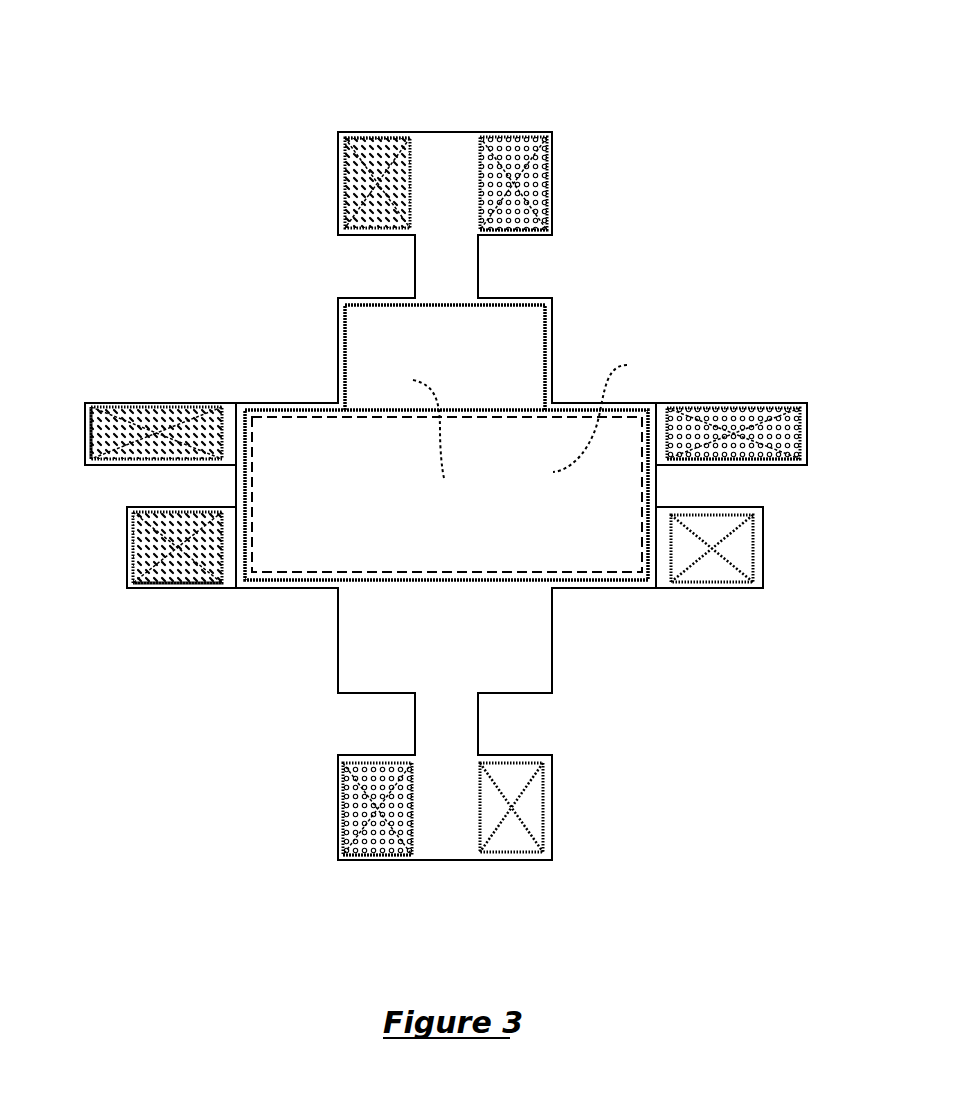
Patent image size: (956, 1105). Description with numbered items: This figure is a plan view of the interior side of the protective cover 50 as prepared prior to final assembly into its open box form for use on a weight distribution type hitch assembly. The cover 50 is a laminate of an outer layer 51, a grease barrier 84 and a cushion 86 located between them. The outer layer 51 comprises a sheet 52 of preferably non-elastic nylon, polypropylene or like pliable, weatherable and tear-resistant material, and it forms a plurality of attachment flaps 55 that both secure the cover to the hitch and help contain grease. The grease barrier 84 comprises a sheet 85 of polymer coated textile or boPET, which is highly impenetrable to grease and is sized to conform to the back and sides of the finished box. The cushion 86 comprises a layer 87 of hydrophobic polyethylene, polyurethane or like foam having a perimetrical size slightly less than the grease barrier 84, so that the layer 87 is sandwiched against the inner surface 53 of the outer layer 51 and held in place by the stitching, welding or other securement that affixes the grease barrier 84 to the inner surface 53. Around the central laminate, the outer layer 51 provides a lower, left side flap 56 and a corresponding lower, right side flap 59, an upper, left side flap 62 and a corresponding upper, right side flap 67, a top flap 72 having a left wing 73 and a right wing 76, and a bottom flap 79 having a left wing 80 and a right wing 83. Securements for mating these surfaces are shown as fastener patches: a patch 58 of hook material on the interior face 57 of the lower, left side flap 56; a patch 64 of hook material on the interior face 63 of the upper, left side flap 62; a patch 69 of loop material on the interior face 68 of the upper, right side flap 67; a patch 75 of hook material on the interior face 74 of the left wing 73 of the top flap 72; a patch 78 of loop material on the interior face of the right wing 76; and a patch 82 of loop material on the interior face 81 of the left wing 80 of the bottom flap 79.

The protective cover 50 is at (663, 250).
The outer layer 51 is at (445, 267).
The sheet 52 is at (463, 152).
The inner surface 53 is at (460, 636).
The attachment flaps 55 is at (227, 135).
The lower, left side flap 56 is at (192, 573).
The interior face 57 is at (197, 517).
The patch 58 is at (135, 537).
The lower, right side flap 59 is at (698, 572).
The upper, left side flap 62 is at (118, 407).
The interior face 63 is at (145, 413).
The patch 64 is at (95, 428).
The upper, right side flap 67 is at (778, 460).
The interior face 68 is at (783, 430).
The patch 69 is at (760, 445).
The top flap 72 is at (435, 147).
The left wing 73 is at (342, 235).
The interior face 74 is at (357, 165).
The patch 75 is at (378, 142).
The right wing 76 is at (547, 215).
The patch 78 is at (503, 140).
The bottom flap 79 is at (530, 167).
The left wing 80 is at (355, 755).
The interior face 81 is at (390, 767).
The patch 82 is at (367, 833).
The right wing 83 is at (547, 757).
The grease barrier 84 is at (462, 359).
The sheet 85 is at (507, 350).
The cushion 86 is at (652, 372).
The layer 87 is at (413, 424).